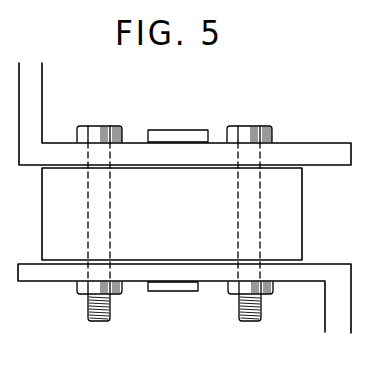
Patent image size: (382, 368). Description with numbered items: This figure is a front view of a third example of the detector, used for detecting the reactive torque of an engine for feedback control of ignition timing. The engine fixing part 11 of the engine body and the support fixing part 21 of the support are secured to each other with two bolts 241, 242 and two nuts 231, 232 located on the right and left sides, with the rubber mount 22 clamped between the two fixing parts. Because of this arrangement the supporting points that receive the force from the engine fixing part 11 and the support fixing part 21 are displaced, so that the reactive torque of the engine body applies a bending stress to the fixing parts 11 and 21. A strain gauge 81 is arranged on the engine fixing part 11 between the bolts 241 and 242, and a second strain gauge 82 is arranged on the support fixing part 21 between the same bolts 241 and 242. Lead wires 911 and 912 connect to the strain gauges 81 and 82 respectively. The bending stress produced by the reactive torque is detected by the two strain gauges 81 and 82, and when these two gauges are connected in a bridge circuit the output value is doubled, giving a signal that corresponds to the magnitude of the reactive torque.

The engine fixing part 11 is at (325, 142).
The support fixing part 21 is at (330, 272).
The rubber mount 22 is at (293, 197).
The strain gauge 81 is at (167, 130).
The strain gauge 82 is at (190, 290).
The lead wire 911 is at (208, 141).
The lead wire 912 is at (199, 282).
The bolt 241 is at (93, 126).
The bolt 242 is at (256, 125).
The nut 231 is at (77, 285).
The nut 232 is at (273, 290).